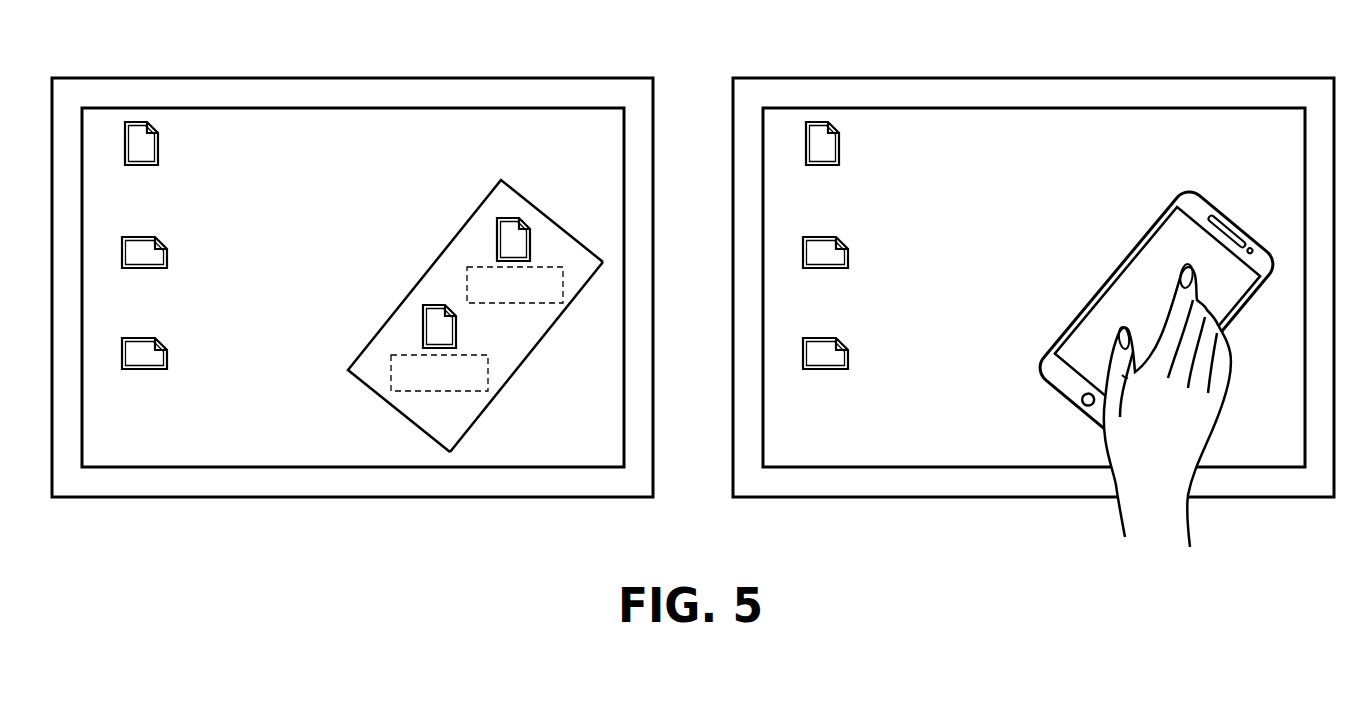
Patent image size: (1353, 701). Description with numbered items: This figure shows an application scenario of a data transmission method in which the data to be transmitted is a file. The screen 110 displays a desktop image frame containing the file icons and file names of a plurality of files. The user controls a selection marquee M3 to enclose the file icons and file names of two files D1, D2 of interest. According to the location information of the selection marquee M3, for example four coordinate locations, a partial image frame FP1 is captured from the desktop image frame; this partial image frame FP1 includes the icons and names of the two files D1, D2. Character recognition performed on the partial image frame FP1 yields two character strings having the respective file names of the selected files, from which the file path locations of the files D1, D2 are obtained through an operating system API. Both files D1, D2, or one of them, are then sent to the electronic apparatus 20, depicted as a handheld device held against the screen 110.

The screen 110 is at (146, 107).
The partial image frame FP1 is at (470, 246).
The file D1 is at (423, 327).
The file D2 is at (532, 248).
The selection marquee M3 is at (492, 405).
The electronic apparatus 20 is at (1213, 205).